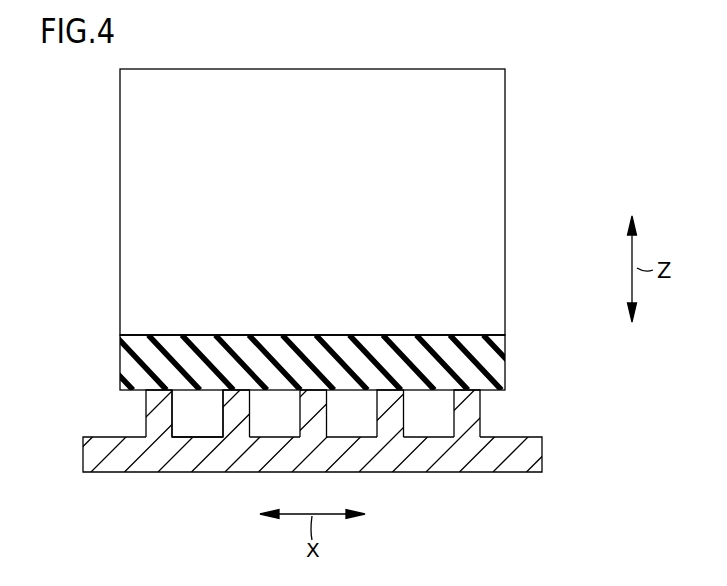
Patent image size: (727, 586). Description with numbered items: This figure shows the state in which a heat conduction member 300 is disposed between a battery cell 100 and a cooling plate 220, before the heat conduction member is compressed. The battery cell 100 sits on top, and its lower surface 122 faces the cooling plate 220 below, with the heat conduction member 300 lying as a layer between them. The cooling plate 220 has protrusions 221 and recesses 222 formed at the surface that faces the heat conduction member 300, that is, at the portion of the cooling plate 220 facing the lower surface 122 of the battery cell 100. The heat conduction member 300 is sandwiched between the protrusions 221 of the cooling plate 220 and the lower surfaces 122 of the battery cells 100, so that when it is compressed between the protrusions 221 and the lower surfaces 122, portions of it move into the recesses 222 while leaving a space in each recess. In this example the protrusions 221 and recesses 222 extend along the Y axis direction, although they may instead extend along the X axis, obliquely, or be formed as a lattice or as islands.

The battery cell 100 is at (487, 207).
The lower surface 122 is at (343, 337).
The heat conduction member 300 is at (488, 362).
The cooling plate 220 is at (531, 461).
The protrusions 221 is at (468, 410).
The recesses 222 is at (175, 408).